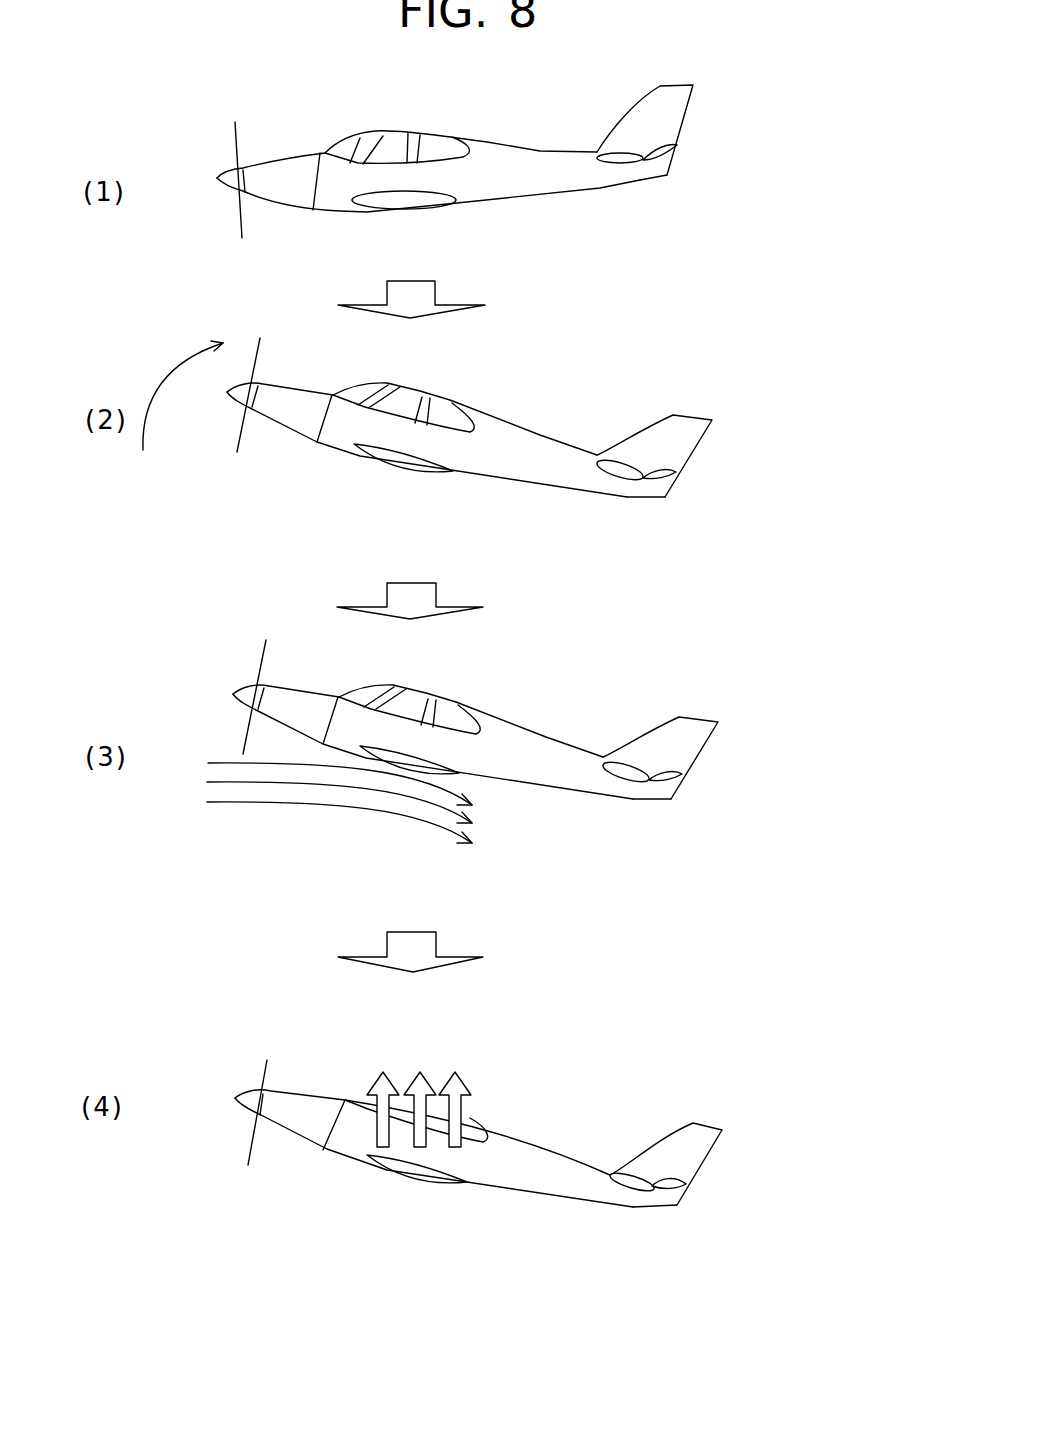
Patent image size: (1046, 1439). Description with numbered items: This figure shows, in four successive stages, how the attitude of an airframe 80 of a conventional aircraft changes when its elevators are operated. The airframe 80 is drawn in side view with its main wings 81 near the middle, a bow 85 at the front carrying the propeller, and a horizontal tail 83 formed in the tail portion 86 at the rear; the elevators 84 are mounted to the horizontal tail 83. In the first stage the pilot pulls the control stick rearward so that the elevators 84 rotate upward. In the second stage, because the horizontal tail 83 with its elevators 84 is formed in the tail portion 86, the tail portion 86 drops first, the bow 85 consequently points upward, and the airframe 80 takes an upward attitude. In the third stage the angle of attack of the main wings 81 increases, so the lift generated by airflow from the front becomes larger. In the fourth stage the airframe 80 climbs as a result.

The airframe 80 is at (486, 136).
The main wings 81 is at (440, 189).
The horizontal tail 83 is at (620, 163).
The elevators 84 is at (662, 155).
The bow 85 is at (255, 158).
The tail portion 86 is at (665, 185).